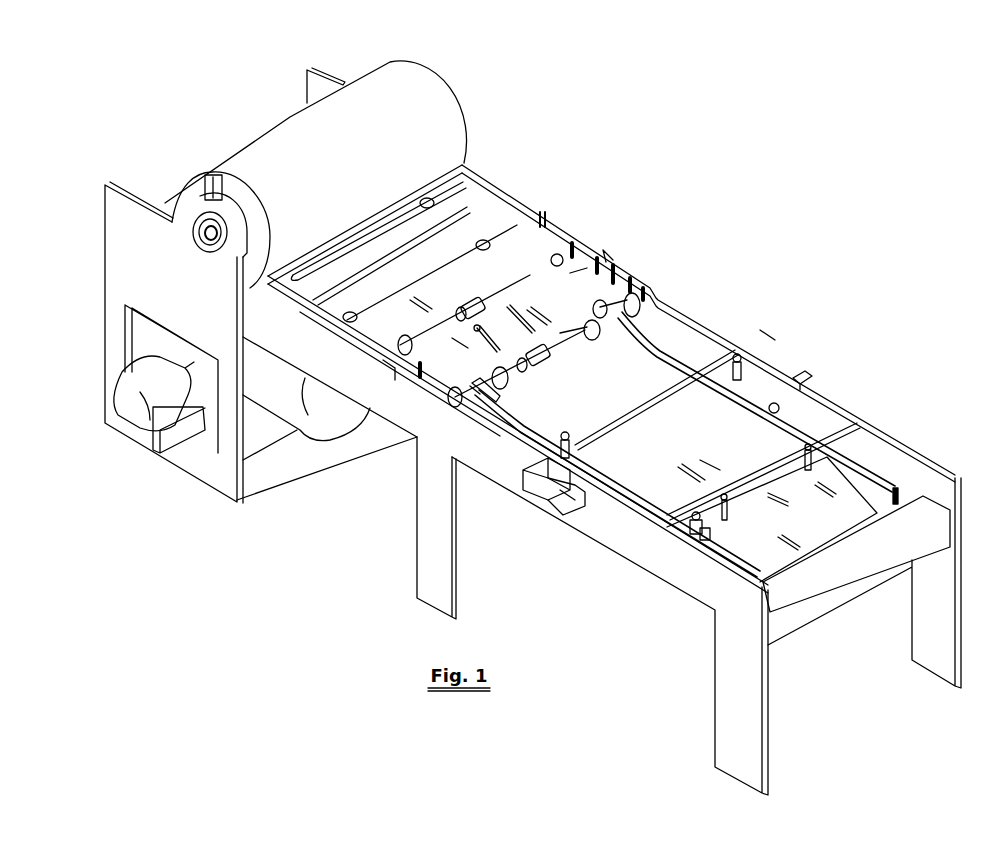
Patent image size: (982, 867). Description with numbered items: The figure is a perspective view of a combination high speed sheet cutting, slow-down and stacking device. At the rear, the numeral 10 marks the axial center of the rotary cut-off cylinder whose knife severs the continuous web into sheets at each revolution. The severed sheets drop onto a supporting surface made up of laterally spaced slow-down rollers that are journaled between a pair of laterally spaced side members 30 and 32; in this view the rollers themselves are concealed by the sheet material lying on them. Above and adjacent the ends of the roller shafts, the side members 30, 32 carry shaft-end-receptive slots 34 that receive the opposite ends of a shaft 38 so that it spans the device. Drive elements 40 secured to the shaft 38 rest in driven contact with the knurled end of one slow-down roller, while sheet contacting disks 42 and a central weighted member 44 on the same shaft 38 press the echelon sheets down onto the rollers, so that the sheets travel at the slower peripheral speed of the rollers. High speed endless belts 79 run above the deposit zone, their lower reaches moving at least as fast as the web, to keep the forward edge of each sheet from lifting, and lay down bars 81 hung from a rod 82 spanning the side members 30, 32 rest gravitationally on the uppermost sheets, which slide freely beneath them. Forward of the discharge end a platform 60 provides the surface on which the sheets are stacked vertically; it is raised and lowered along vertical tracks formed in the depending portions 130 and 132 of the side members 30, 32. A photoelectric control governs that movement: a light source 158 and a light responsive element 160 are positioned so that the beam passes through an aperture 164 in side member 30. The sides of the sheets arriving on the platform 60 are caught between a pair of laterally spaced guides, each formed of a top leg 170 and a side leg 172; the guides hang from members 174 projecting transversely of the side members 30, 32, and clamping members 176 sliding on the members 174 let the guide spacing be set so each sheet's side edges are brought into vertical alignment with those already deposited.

The axial center of rotary cut-off cylinder 10 is at (207, 237).
The side member 30 is at (508, 208).
The side member 32 is at (327, 418).
The shaft-end-receptive slots 34 is at (534, 212).
The shaft 38 is at (498, 302).
The drive elements 40 is at (396, 360).
The sheet contacting rollers or disks 42 is at (412, 342).
The central weighted member 44 is at (472, 307).
The platform 60 is at (772, 519).
The high speed endless belts 79 is at (470, 226).
The lay down bars 81 is at (485, 335).
The rod 82 is at (460, 343).
The depending portion of side member 130 is at (912, 627).
The depending portion of side member 132 is at (450, 572).
The source of light 158 is at (810, 377).
The light responsive element 160 is at (555, 505).
The aperture 164 is at (775, 403).
The top leg of guide 170 is at (508, 412).
The side leg of guide 172 is at (495, 418).
The transverse members 174 is at (630, 412).
The clamping members 176 is at (572, 450).